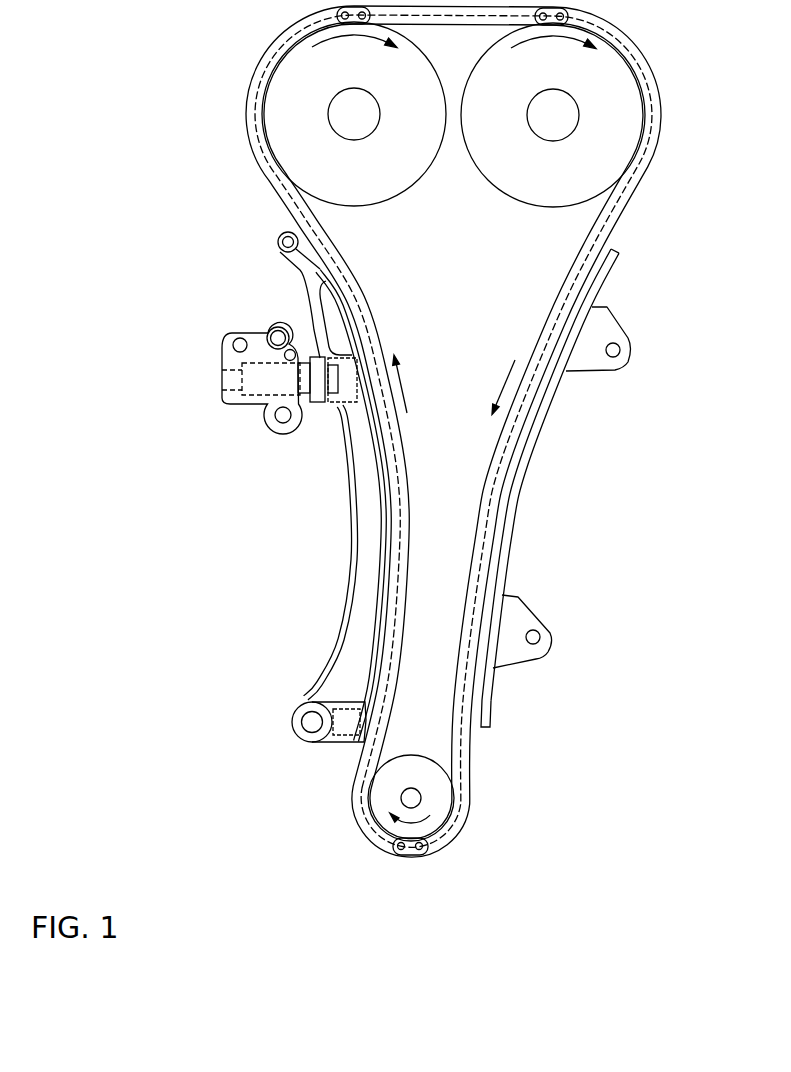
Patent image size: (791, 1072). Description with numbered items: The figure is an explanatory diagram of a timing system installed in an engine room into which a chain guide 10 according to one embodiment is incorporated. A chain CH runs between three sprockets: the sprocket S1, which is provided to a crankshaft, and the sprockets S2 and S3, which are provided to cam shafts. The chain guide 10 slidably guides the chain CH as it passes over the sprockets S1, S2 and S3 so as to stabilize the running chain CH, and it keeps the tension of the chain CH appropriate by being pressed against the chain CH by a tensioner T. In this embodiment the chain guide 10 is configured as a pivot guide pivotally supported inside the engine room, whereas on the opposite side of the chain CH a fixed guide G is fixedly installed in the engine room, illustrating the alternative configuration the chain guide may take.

The chain CH is at (612, 213).
The sprocket S1 is at (438, 793).
The sprocket S2 is at (287, 105).
The sprocket S3 is at (603, 103).
The fixed guide G is at (509, 525).
The tensioner T is at (228, 340).
The chain guide 10 is at (358, 637).